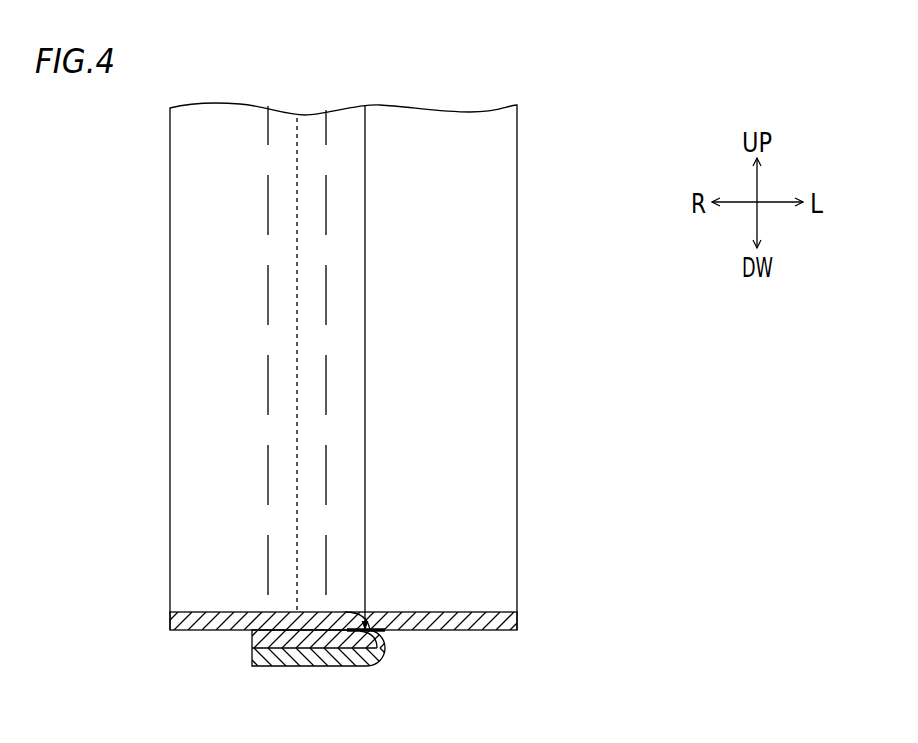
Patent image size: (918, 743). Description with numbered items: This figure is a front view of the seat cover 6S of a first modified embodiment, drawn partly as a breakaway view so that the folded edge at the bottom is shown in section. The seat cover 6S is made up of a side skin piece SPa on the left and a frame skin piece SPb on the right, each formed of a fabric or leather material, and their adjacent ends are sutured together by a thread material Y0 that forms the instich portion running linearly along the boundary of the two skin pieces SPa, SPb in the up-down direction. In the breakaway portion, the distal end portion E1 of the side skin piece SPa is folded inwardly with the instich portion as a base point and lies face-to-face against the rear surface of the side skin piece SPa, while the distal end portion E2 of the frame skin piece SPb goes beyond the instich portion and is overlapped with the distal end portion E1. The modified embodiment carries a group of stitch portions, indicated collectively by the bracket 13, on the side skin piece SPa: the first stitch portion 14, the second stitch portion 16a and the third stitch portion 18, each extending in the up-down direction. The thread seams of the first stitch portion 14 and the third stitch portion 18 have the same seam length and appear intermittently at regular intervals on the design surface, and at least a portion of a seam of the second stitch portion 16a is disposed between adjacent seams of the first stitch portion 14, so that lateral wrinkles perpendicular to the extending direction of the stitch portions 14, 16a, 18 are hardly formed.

The seat cover 6S is at (543, 172).
The line group 13 is at (186, 359).
The third stitch portion 18 is at (268, 185).
The second stitch portion 16a is at (297, 223).
The first stitch portion 14 is at (326, 271).
The side skin piece SPa is at (190, 473).
The frame skin piece SPb is at (493, 433).
The distal end portion of the side skin piece E1 is at (251, 638).
The distal end portion of the frame skin piece E2 is at (251, 657).
The thread material Y0 is at (373, 650).